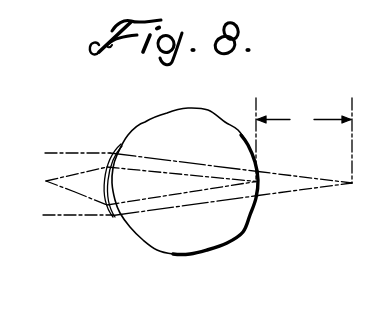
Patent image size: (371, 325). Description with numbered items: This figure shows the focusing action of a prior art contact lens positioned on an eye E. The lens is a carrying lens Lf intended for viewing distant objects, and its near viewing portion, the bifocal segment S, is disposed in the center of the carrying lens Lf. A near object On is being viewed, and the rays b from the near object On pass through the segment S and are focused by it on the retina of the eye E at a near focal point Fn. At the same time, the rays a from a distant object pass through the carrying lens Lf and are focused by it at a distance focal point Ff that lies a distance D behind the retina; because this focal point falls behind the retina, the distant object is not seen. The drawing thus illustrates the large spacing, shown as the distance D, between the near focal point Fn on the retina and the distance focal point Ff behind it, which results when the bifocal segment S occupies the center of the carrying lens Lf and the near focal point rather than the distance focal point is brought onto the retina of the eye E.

The eye E is at (188, 254).
The carrying lens Lf is at (106, 168).
The bifocal segment S is at (108, 180).
The rays from a distant object a is at (61, 153).
The rays from the near object b is at (77, 192).
The near object On is at (46, 181).
The near focal point Fn is at (266, 126).
The distance focal point Ff is at (341, 127).
The distance behind the retina D is at (304, 120).